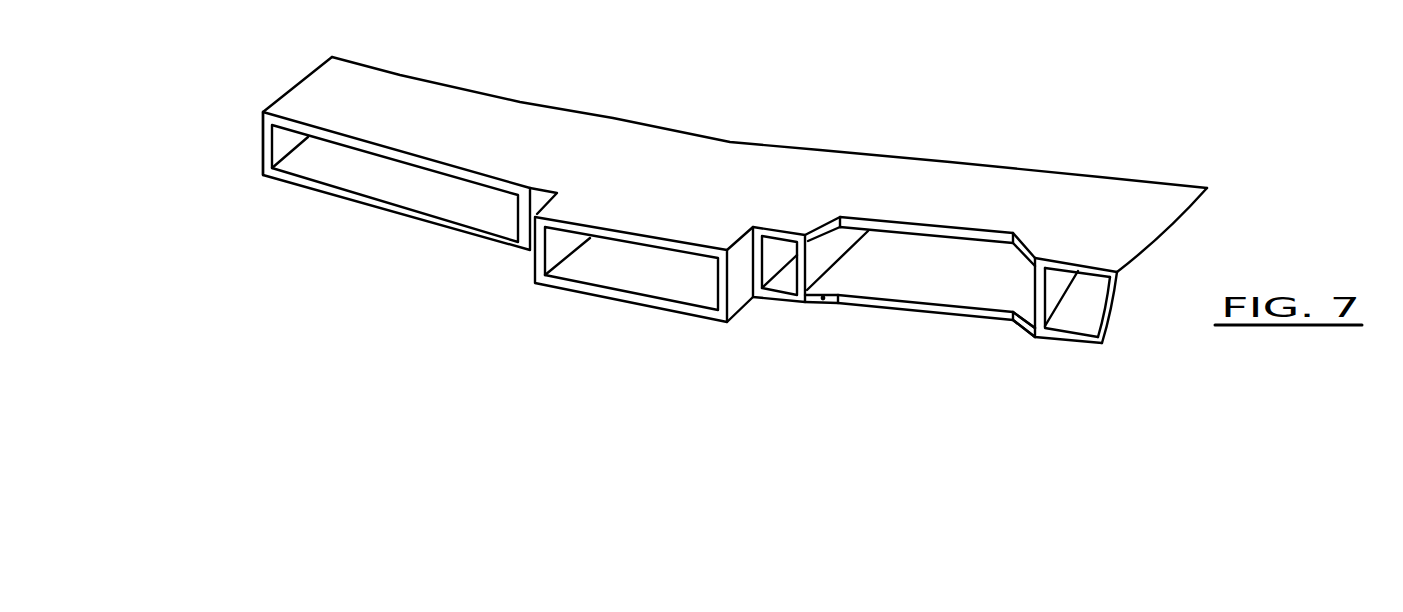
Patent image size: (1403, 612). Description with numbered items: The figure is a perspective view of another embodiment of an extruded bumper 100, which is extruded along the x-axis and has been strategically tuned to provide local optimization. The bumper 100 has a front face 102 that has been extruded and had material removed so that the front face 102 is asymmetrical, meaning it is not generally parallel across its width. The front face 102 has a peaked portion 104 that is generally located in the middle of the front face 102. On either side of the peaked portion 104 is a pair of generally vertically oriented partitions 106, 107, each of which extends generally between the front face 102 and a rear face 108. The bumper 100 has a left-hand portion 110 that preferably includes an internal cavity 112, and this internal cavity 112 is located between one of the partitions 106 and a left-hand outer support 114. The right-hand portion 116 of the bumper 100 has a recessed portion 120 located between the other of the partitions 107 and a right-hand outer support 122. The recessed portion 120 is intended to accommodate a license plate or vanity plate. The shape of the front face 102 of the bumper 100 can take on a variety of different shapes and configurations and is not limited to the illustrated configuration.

The bumper 100 is at (690, 86).
The front face 102 is at (523, 265).
The peaked portion 104 is at (737, 290).
The partition 106 is at (558, 254).
The partition 107 is at (758, 280).
The rear face 108 is at (950, 162).
The left-hand portion 110 is at (393, 215).
The internal cavity 112 is at (340, 177).
The left-hand outer support 114 is at (265, 142).
The right-hand portion 116 is at (1022, 327).
The recessed portion 120 is at (923, 297).
The right-hand outer support 122 is at (1050, 315).